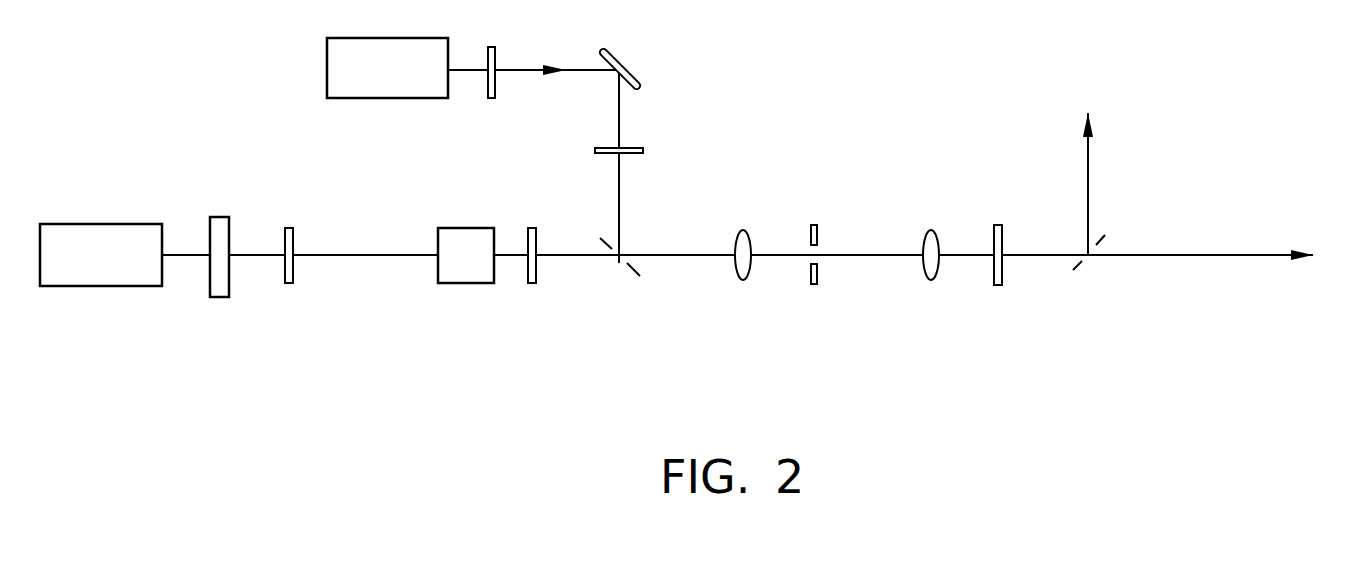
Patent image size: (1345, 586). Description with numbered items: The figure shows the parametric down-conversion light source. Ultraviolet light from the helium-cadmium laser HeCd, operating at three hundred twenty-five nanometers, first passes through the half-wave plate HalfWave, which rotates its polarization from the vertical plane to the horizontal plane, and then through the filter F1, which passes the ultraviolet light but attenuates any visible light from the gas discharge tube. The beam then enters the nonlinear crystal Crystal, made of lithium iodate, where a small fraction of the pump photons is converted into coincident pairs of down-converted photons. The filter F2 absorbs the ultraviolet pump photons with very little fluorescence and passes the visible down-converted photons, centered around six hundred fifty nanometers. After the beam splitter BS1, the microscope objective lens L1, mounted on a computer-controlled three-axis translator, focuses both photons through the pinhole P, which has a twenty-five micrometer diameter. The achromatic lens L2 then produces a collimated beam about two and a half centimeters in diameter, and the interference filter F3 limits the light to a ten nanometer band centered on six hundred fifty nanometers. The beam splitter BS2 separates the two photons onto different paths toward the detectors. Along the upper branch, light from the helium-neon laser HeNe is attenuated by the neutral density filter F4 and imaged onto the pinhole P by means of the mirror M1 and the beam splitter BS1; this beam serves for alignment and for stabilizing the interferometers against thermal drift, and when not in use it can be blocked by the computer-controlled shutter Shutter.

The helium-cadmium laser HeCd is at (101, 255).
The half-wave plate HalfWave is at (210, 291).
The filter F1 is at (294, 284).
The nonlinear crystal Crystal is at (460, 282).
The filter F2 is at (534, 284).
The beam splitter BS1 is at (617, 289).
The lens L1 is at (744, 285).
The pinhole P is at (819, 280).
The achromatic lens L2 is at (927, 285).
The filter F3 is at (1004, 282).
The beam splitter BS2 is at (1097, 287).
The helium-neon laser HeNe is at (387, 68).
The neutral density filter F4 is at (492, 93).
The mirror M1 is at (628, 65).
The shutter Shutter is at (665, 159).